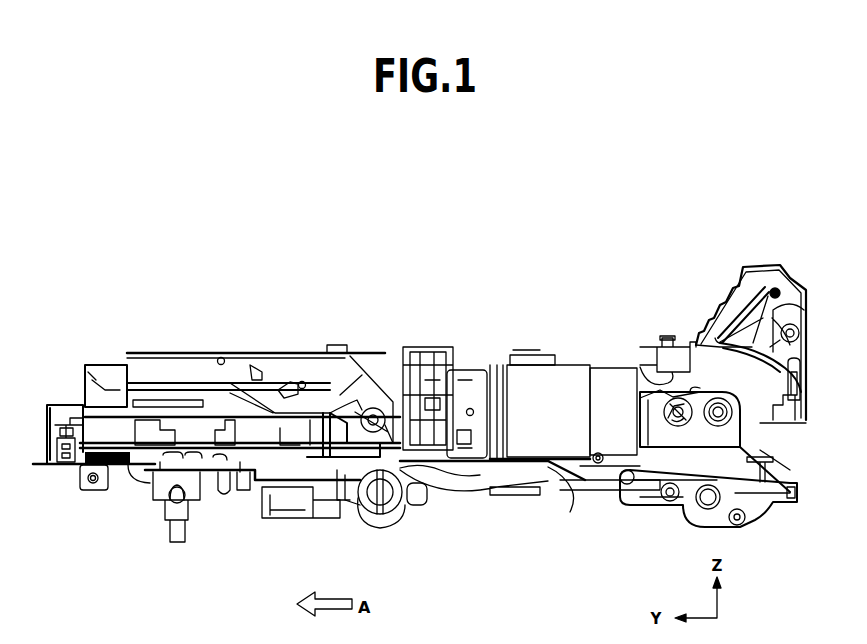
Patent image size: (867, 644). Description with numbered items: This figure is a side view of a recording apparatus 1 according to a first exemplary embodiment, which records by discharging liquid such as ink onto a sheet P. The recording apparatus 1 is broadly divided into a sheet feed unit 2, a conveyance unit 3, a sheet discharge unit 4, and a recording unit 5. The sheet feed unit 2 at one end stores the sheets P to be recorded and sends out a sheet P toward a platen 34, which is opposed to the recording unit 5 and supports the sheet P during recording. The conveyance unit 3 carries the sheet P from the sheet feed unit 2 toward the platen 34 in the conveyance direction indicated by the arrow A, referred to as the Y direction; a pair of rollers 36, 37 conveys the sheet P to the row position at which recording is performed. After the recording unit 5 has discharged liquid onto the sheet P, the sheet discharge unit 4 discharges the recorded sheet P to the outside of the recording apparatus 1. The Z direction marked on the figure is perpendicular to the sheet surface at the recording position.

The recording apparatus 1 is at (47, 216).
The sheet feed unit 2 is at (805, 258).
The conveyance unit 3 is at (440, 531).
The sheet discharge unit 4 is at (132, 533).
The recording unit 5 is at (545, 341).
The platen 34 is at (298, 503).
The roller 36 is at (415, 468).
The roller 37 is at (425, 493).